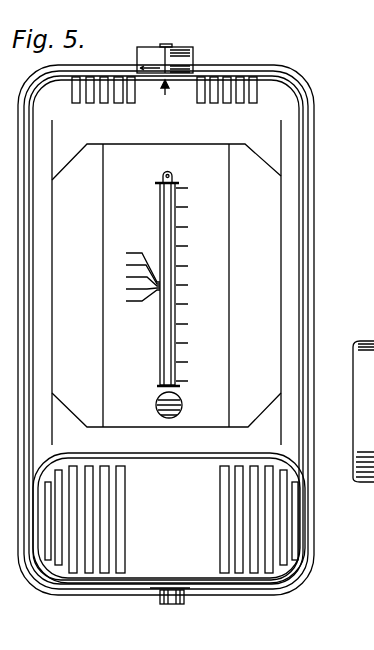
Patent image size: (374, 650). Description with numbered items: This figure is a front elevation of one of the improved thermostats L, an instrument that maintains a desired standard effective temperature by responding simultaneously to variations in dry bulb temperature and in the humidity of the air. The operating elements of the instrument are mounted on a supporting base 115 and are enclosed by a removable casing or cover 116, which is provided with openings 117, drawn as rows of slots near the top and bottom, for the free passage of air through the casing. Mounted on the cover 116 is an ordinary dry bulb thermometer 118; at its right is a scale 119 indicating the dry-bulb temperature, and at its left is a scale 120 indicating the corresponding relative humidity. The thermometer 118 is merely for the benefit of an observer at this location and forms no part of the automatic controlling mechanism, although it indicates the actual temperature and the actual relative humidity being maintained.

The louvered housing L is at (315, 123).
The supporting base 115 is at (323, 159).
The removable casing or cover 116 is at (297, 202).
The openings 117 is at (68, 571).
The dry bulb thermometer 118 is at (165, 362).
The scale 119 is at (215, 273).
The scale 120 is at (93, 287).